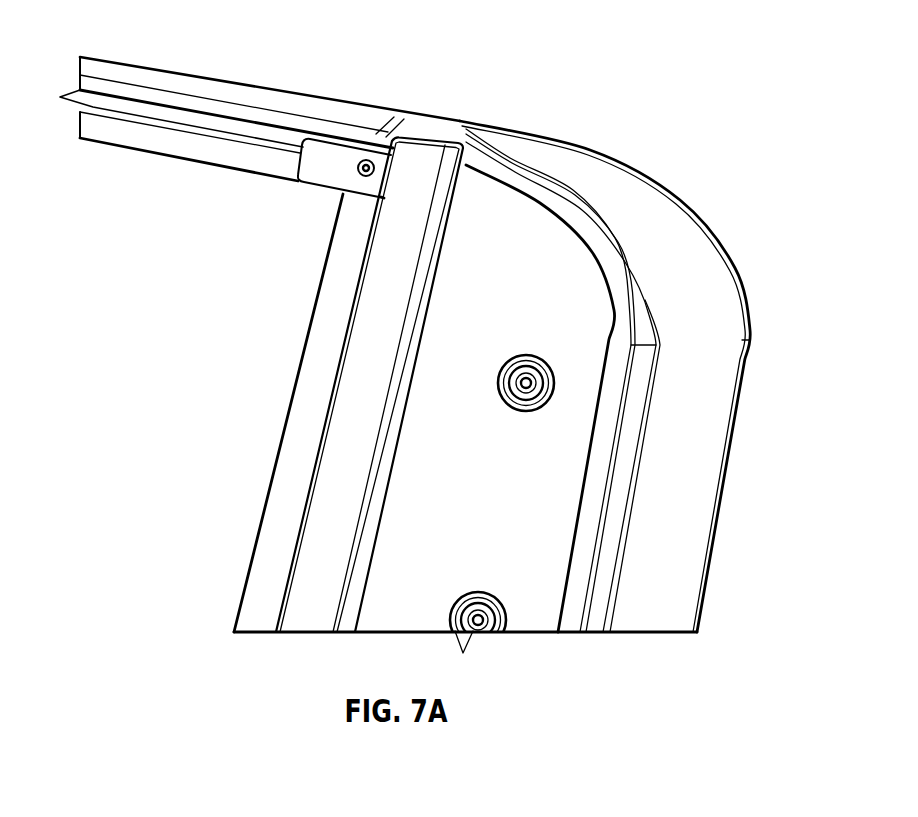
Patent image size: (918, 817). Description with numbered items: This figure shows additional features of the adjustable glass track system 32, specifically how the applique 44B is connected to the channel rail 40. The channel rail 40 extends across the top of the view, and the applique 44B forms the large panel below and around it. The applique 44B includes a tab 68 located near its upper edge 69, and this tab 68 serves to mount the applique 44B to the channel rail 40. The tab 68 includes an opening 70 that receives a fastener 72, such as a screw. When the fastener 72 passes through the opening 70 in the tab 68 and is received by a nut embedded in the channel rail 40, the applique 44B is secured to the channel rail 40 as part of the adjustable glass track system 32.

The adjustable glass track system 32 is at (748, 72).
The channel rail 40 is at (202, 78).
The applique 44B is at (540, 452).
The tab 68 is at (330, 147).
The upper edge 69 is at (427, 138).
The opening 70 is at (376, 172).
The fastener 72 is at (356, 170).